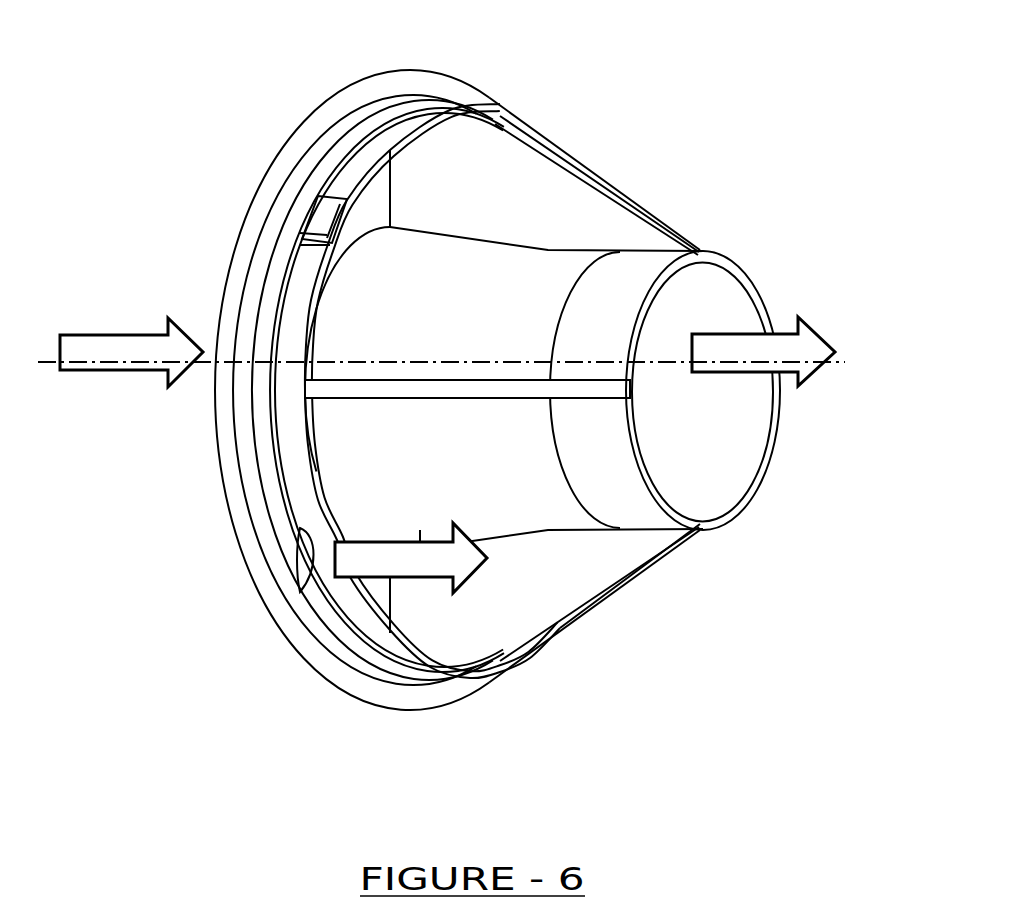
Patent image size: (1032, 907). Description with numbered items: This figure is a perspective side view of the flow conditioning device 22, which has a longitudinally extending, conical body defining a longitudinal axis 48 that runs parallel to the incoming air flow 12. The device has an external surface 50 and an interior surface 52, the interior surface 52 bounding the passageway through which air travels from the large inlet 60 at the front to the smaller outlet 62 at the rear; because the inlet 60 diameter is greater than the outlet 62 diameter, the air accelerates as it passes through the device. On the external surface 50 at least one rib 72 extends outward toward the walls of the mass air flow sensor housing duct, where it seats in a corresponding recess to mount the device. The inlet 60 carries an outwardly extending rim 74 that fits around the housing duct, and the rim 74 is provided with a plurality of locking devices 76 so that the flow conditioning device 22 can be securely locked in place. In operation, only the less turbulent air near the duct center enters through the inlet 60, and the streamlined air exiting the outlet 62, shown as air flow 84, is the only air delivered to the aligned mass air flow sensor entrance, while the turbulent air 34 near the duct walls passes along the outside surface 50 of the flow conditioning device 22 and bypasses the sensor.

The flow conditioning device 22 is at (718, 72).
The air flow 12 is at (128, 305).
The air exiting the outlet 84 is at (758, 338).
The longitudinal axis 48 is at (818, 375).
The rib 72 is at (571, 194).
The inlet 60 is at (329, 474).
The external surface 50 is at (451, 429).
The interior surface 52 is at (690, 443).
The outlet 62 is at (757, 457).
The locking devices 76 is at (313, 190).
The rim 74 is at (313, 563).
The turbulent air 34 is at (421, 577).